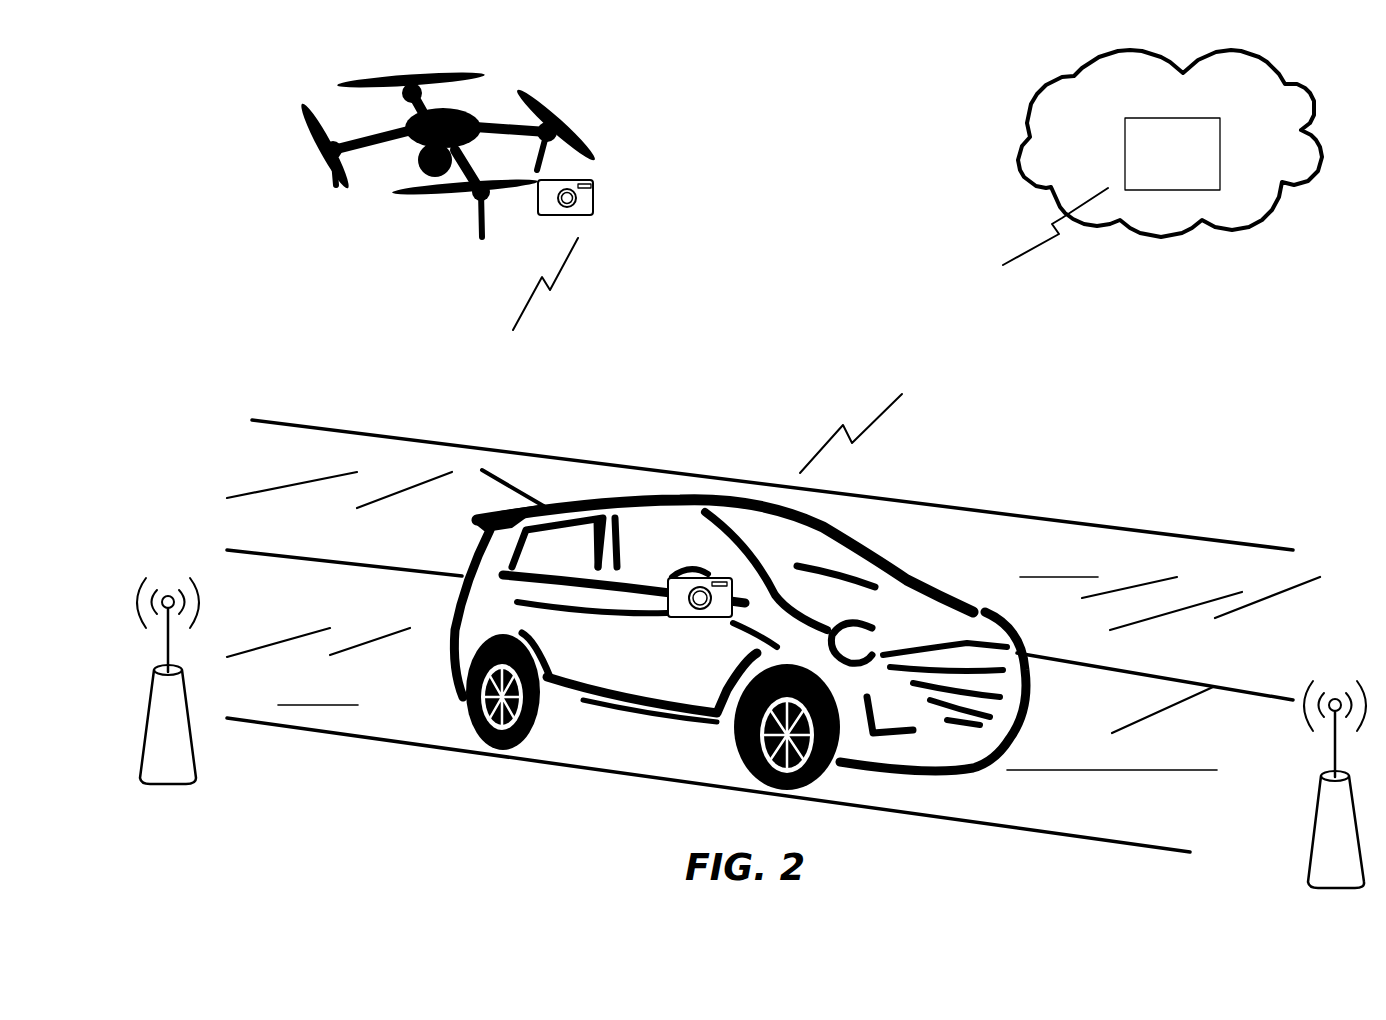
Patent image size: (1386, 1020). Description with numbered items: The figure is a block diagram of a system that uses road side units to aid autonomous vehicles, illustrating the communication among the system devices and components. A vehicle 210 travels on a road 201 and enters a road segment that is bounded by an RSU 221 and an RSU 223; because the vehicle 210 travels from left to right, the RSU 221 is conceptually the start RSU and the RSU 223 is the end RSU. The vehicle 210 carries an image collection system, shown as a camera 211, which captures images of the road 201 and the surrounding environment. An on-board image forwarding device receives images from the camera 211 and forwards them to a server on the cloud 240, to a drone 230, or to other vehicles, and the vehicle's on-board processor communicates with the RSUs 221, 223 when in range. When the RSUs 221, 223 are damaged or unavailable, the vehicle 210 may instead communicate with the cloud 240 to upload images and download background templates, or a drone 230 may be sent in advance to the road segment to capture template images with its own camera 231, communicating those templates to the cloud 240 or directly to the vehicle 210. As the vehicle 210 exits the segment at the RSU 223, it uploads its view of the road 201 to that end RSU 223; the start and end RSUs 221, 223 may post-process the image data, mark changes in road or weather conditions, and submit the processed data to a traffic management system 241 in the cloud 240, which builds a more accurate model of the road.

The road 201 is at (995, 543).
The vehicle 210 is at (877, 552).
The camera 211 is at (703, 622).
The RSU 221 is at (175, 784).
The RSU 223 is at (1310, 870).
The drone 230 is at (592, 142).
The camera 231 is at (583, 213).
The cloud 240 is at (1028, 104).
The traffic management system 241 is at (1190, 118).